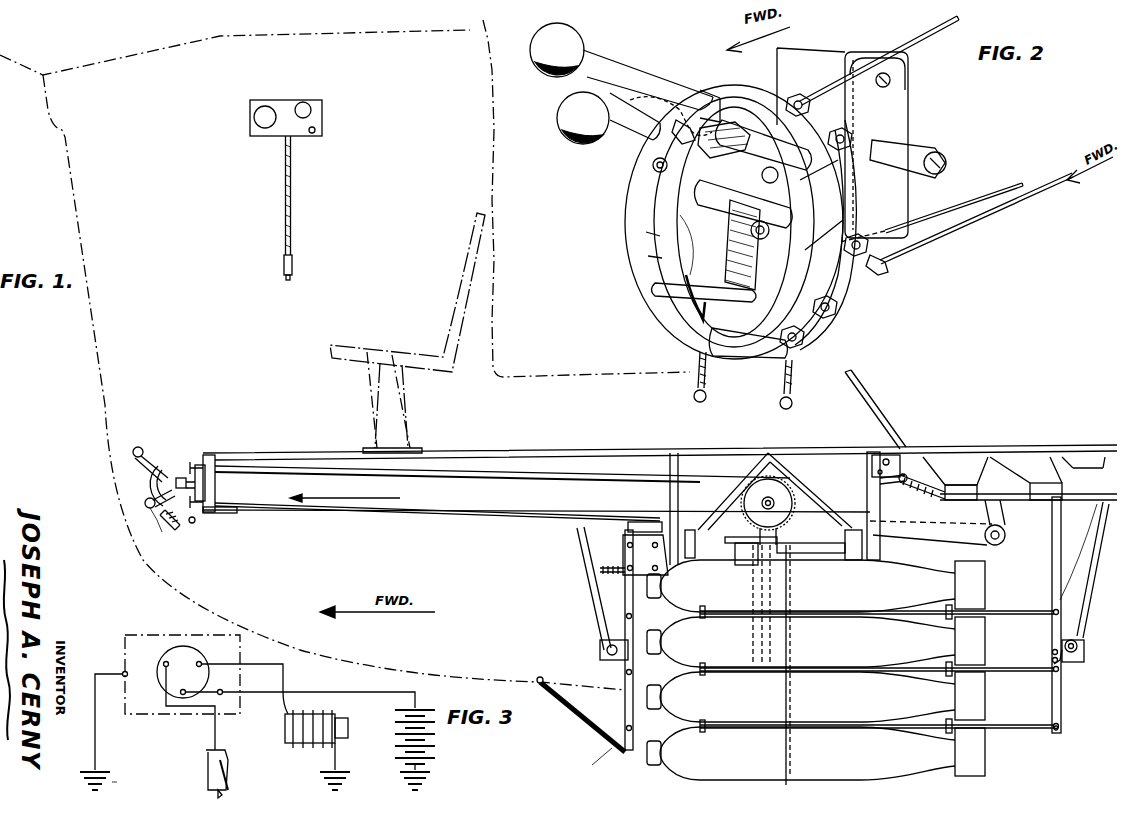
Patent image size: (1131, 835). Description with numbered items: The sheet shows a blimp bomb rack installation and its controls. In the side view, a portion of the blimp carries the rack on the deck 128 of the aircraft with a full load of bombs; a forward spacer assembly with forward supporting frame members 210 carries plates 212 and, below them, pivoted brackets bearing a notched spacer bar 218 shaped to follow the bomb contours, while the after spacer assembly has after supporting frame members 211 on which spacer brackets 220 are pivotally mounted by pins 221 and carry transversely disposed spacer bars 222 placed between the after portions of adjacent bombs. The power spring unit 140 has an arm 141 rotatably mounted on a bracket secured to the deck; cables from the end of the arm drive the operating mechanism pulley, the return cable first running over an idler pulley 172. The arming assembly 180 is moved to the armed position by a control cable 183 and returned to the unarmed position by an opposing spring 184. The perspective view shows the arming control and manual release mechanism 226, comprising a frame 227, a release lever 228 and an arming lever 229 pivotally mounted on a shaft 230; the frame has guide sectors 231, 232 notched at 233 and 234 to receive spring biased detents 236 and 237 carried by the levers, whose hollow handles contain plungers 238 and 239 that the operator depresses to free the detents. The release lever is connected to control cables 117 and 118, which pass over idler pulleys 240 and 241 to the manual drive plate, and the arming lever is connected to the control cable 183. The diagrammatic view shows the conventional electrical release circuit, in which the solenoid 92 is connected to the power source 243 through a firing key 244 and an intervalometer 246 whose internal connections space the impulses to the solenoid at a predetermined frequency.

In FIG. 3, the solenoid 92 is at (320, 745).
In FIG. 2, the control cable 117 is at (925, 30).
In FIG. 3, the control cable 117 is at (652, 477).
In FIG. 2, the control cable 118 is at (990, 218).
In FIG. 3, the control cable 118 is at (610, 518).
In FIG. 3, the deck 128 is at (505, 451).
In FIG. 3, the power spring unit 140 is at (916, 460).
In FIG. 3, the arm 141 is at (872, 480).
In FIG. 3, the idler pulley 172 is at (1005, 540).
In FIG. 3, the arming assembly 180 is at (621, 546).
In FIG. 2, the control cable 183 is at (945, 210).
In FIG. 3, the control cable 183 is at (450, 510).
In FIG. 3, the spring 184 is at (620, 571).
In FIG. 3, the forward supporting frame members 210 is at (625, 600).
In FIG. 3, the after supporting frame members 211 is at (1063, 590).
In FIG. 3, the plates 212 is at (668, 568).
In FIG. 3, the spacer bar 218 is at (707, 637).
In FIG. 3, the spacer brackets 220 is at (1052, 726).
In FIG. 3, the pins 221 is at (1048, 640).
In FIG. 3, the spacer bars 222 is at (946, 724).
In FIG. 2, the arming control and manual release mechanism 226 is at (606, 228).
In FIG. 3, the arming control and manual release mechanism 226 is at (190, 460).
In FIG. 2, the frame 227 is at (850, 298).
In FIG. 2, the release lever 228 is at (610, 72).
In FIG. 2, the arming lever 229 is at (630, 140).
In FIG. 2, the shaft 230 is at (760, 225).
In FIG. 2, the guide sector 231 is at (699, 325).
In FIG. 2, the guide sector 232 is at (650, 240).
In FIG. 2, the notches 233 is at (687, 140).
In FIG. 2, the notches 234 is at (652, 260).
In FIG. 2, the spring biased detent 236 is at (712, 150).
In FIG. 2, the spring biased detent 237 is at (657, 167).
In FIG. 2, the plunger 238 is at (558, 30).
In FIG. 3, the plunger 238 is at (143, 451).
In FIG. 2, the plunger 239 is at (567, 125).
In FIG. 3, the plunger 239 is at (145, 503).
In FIG. 2, the idler pulley 240 is at (890, 60).
In FIG. 2, the idler pulley 241 is at (878, 266).
In FIG. 3, the power source 243 is at (432, 748).
In FIG. 3, the firing key 244 is at (196, 760).
In FIG. 1, the intervalometer 246 is at (335, 126).
In FIG. 3, the intervalometer 246 is at (163, 617).